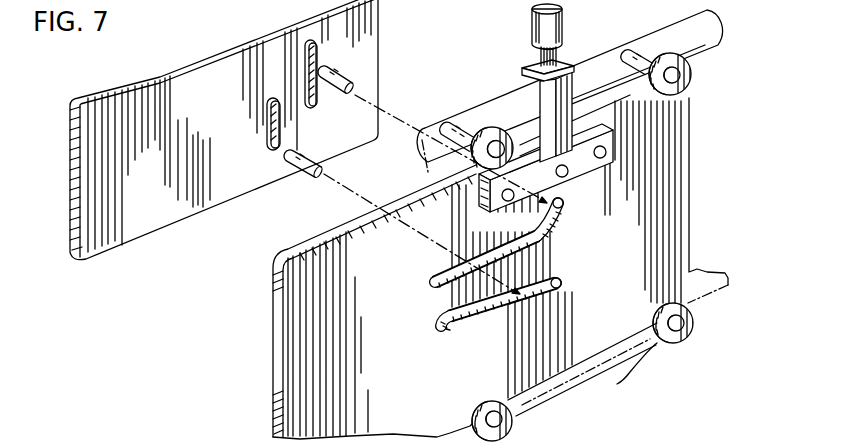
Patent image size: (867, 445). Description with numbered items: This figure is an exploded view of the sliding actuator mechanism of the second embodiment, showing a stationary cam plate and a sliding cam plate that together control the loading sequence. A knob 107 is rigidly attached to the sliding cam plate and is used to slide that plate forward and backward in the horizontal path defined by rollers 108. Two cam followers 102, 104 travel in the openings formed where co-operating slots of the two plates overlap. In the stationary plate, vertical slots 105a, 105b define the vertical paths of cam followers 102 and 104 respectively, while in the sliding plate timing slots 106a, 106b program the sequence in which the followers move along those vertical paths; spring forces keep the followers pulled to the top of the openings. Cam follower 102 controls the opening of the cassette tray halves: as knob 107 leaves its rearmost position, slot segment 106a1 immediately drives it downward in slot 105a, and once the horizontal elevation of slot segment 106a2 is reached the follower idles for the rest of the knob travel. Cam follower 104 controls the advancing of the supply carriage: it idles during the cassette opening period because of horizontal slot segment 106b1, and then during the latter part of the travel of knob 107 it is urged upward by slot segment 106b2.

The cam follower 102 is at (334, 77).
The cam follower 104 is at (307, 180).
The vertical slot 105a is at (316, 58).
The vertical slot 105b is at (268, 156).
The timing slot 106a is at (548, 233).
The slot segment 106a1 is at (563, 203).
The slot segment 106a2 is at (545, 220).
The timing slot 106b is at (445, 327).
The horizontal slot segment 106b1 is at (565, 283).
The slot segment 106b2 is at (443, 311).
The knob 107 is at (562, 19).
The rollers 108 is at (518, 418).